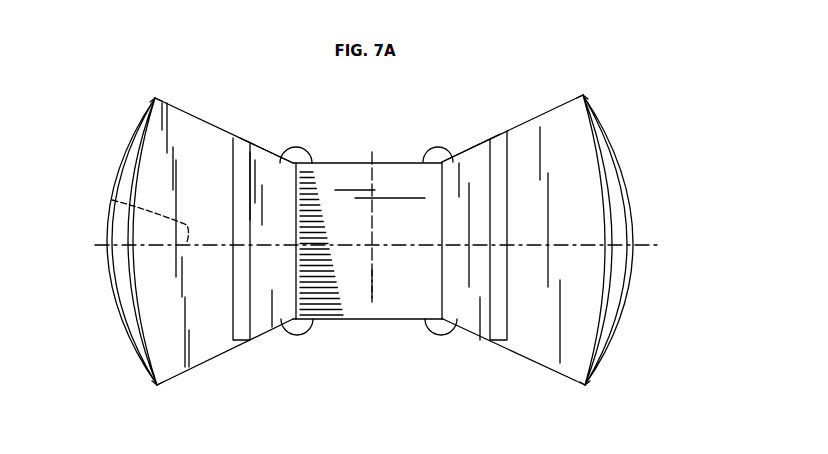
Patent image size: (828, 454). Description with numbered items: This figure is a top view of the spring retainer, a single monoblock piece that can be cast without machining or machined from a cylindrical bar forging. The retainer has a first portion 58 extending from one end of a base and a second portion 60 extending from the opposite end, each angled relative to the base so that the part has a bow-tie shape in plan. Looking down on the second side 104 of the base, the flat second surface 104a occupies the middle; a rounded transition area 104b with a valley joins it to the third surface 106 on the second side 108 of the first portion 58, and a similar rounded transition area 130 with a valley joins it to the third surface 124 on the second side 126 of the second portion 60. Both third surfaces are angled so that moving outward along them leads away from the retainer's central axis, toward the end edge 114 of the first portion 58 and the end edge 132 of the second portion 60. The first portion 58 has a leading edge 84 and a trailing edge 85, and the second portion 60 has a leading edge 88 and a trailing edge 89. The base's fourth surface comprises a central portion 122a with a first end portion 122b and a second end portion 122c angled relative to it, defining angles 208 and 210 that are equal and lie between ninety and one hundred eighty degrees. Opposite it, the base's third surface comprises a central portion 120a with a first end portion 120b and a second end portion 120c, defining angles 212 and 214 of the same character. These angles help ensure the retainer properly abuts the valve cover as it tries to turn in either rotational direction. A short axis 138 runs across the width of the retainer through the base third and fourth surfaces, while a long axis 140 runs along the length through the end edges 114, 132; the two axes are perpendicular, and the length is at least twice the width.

The first portion 58 is at (549, 103).
The second portion 60 is at (205, 112).
The leading edge 84 is at (583, 95).
The trailing edge 85 is at (585, 385).
The leading edge 88 is at (157, 388).
The trailing edge 89 is at (155, 98).
The second side 104 is at (378, 238).
The second surface 104a is at (395, 278).
The rounded transition area 104b is at (503, 132).
The third surface 106 is at (578, 260).
The second side 108 is at (569, 210).
The end edge 114 is at (608, 285).
The central portion 120a is at (388, 321).
The first end portion 120b is at (465, 330).
The second end portion 120c is at (223, 355).
The central portion 122a is at (332, 162).
The first end portion 122b is at (473, 147).
The second end portion 122c is at (273, 150).
The third surface 124 is at (155, 309).
The second side 126 is at (160, 254).
The rounded transition area 130 is at (233, 152).
The end edge 132 is at (142, 346).
The second, short axis 138 is at (372, 298).
The first, long axis 140 is at (112, 200).
The angle 208 is at (432, 160).
The angle 210 is at (311, 160).
The angle 212 is at (447, 335).
The angle 214 is at (293, 338).